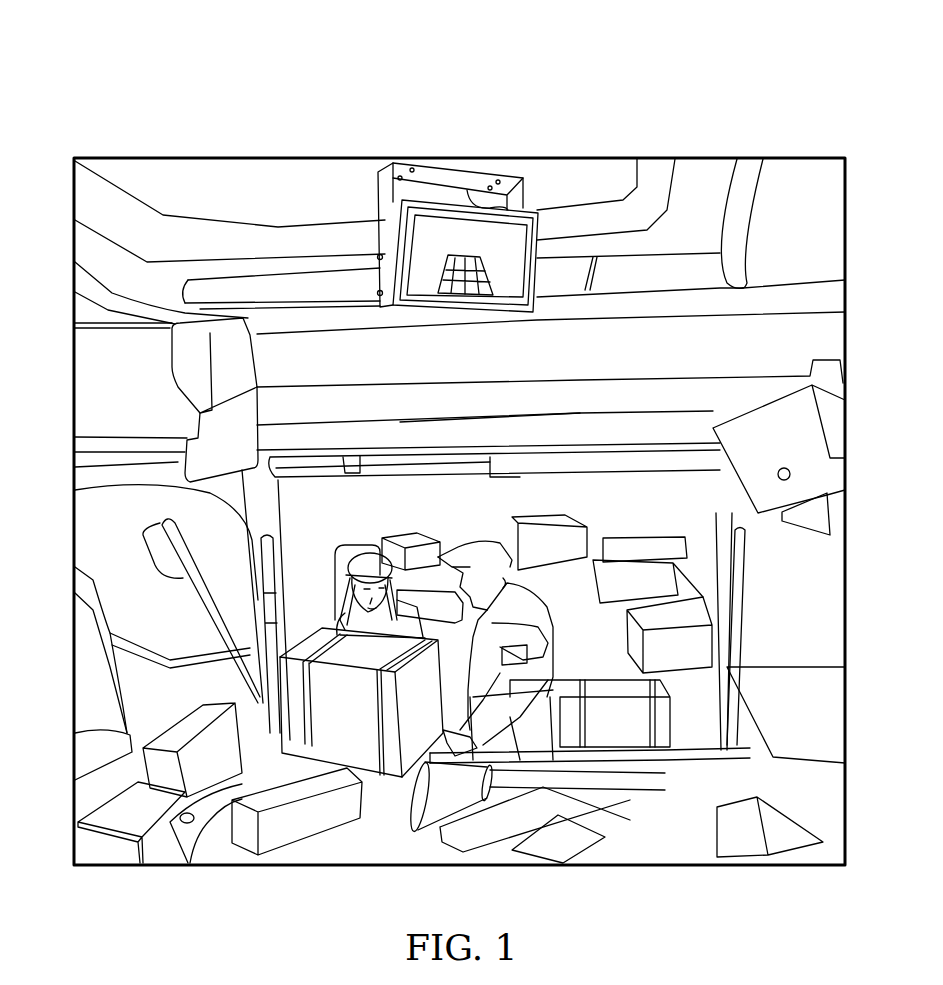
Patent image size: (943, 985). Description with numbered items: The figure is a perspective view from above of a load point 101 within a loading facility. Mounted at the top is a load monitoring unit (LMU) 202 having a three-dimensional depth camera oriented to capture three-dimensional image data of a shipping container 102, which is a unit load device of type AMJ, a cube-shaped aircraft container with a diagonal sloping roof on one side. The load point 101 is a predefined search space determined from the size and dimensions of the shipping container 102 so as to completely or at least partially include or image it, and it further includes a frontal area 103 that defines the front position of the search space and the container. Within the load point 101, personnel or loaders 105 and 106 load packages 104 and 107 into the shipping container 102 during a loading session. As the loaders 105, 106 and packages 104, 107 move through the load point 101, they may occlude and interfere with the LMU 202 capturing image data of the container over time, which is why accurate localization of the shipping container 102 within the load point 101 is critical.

The load point 101 is at (104, 62).
The load monitoring unit (LMU) 202 is at (467, 183).
The shipping container 102 is at (685, 422).
The frontal area 103 is at (665, 752).
The package 104 is at (332, 665).
The loader 105 is at (367, 556).
The loader 106 is at (517, 603).
The package 107 is at (605, 705).